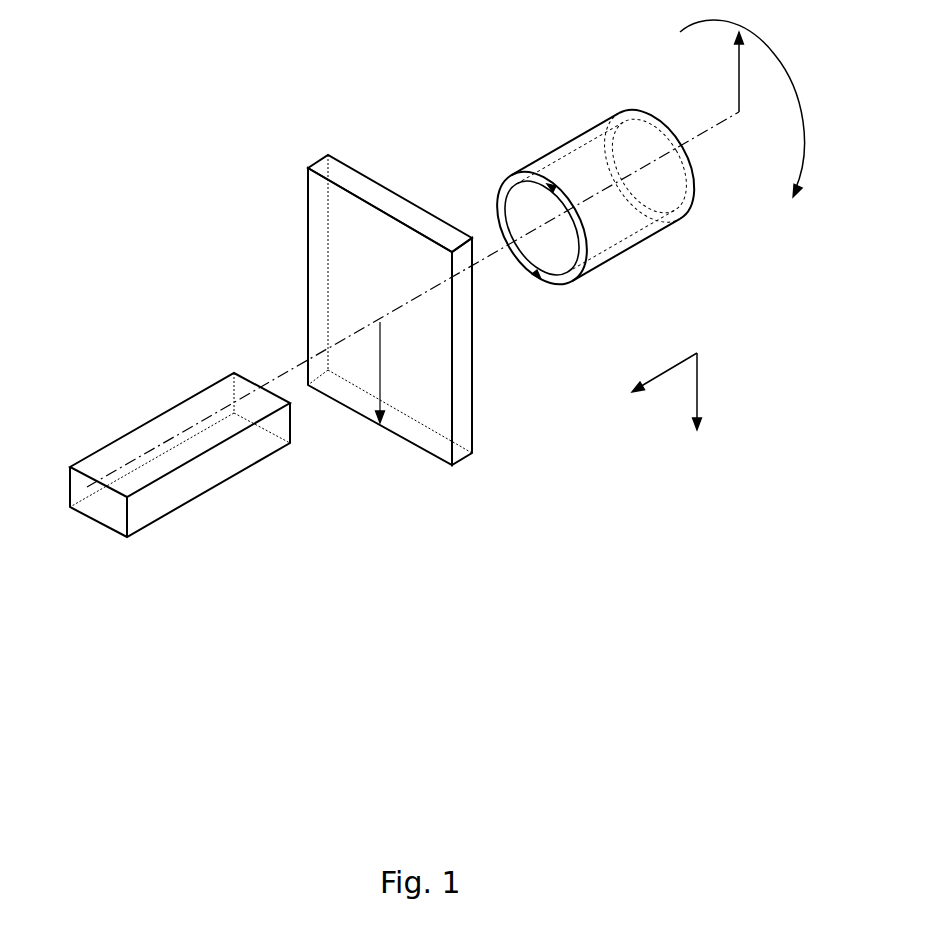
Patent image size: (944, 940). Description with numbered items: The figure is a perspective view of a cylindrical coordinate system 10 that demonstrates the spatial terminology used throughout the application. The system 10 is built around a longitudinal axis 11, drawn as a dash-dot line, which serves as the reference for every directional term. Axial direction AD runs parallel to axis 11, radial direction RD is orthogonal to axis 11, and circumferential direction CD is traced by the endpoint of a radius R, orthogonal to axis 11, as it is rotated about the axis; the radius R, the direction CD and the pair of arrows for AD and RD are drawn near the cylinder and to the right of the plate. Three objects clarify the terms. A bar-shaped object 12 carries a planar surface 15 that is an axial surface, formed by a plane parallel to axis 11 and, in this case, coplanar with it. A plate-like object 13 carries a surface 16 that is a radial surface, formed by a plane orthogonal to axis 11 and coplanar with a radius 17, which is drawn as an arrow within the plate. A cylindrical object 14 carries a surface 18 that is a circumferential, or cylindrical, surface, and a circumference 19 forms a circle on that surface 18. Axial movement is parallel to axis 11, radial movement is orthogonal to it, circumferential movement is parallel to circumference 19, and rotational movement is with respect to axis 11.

The cylindrical coordinate system 10 is at (260, 196).
The longitudinal axis 11 is at (685, 150).
The object 12 is at (154, 535).
The object 13 is at (488, 459).
The object 14 is at (625, 264).
The axial surface 15 is at (143, 440).
The radial surface 16 is at (320, 277).
The radius 17 is at (380, 368).
The circumferential surface 18 is at (567, 137).
The circumference 19 is at (497, 192).
The radius R is at (738, 72).
The circumferential direction CD is at (783, 77).
The axial direction AD is at (667, 370).
The radial direction RD is at (697, 387).